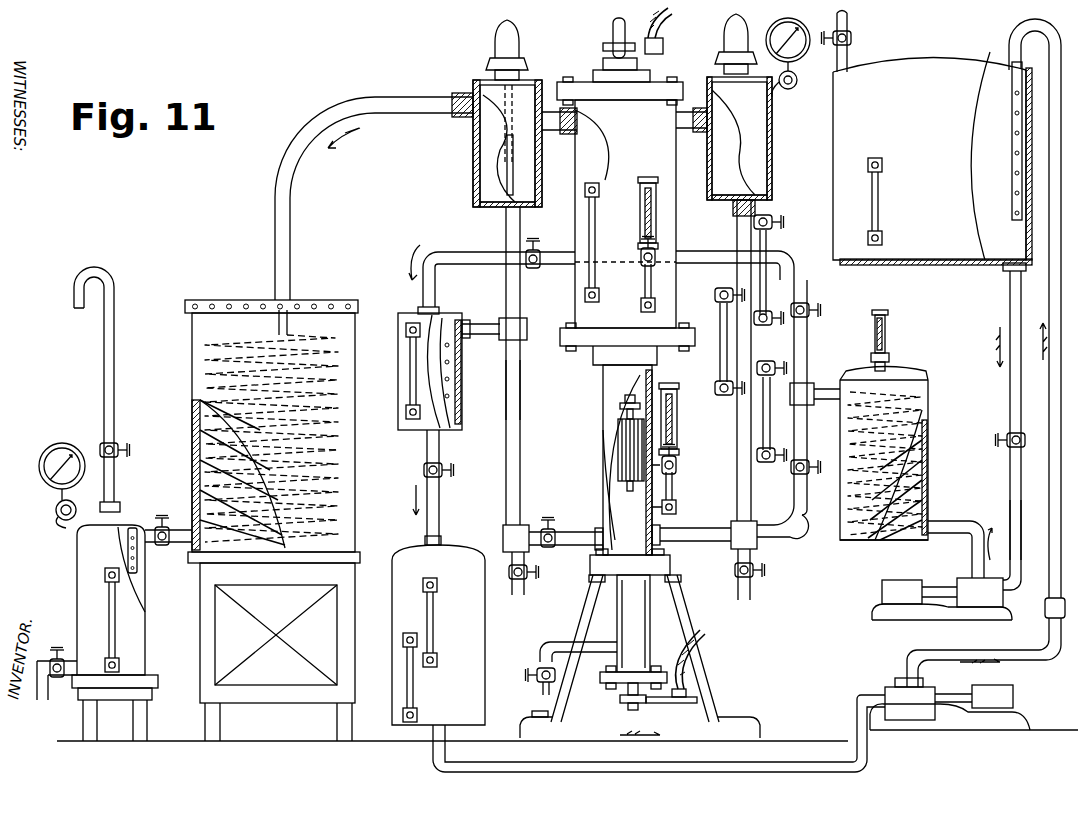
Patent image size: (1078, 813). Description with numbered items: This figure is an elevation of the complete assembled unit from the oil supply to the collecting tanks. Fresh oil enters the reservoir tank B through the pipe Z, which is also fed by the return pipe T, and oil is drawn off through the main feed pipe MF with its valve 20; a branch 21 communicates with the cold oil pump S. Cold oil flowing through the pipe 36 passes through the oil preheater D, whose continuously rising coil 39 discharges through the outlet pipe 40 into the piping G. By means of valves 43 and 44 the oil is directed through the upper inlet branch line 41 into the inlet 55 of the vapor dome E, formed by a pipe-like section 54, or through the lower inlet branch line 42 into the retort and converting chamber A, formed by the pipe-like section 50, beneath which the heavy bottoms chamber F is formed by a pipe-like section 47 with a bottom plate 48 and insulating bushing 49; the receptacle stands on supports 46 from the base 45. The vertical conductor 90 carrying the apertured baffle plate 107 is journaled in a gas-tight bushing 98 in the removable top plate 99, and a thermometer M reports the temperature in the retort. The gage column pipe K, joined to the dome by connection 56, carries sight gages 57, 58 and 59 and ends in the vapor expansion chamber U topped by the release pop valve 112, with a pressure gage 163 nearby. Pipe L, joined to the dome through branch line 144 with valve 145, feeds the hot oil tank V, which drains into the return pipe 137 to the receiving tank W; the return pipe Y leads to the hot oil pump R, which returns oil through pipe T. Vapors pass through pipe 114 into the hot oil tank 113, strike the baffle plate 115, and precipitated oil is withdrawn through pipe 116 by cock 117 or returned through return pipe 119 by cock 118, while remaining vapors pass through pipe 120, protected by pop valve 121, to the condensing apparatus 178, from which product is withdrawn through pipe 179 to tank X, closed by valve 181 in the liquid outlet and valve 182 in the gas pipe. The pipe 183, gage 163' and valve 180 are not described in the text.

The pipe 120 is at (289, 193).
The pop valve 121 is at (510, 40).
The hot oil tank 113 is at (472, 148).
The pipe 114 is at (553, 125).
The baffle plate 115 is at (509, 160).
The vertical conductor 90 is at (613, 40).
The removable top plate 99 is at (605, 78).
The gas-tight bushing 98 is at (636, 72).
The release pop valve 112 is at (733, 32).
The pressure gage 163 is at (801, 57).
The pipe Z is at (850, 55).
The connection 56 is at (690, 132).
The vapor expansion chamber U is at (768, 137).
The vapor dome E is at (672, 178).
The pipe-like section 54 is at (585, 222).
The inlet 55 is at (662, 255).
The upper inlet branch line 41 is at (703, 260).
The sight gage 57 is at (768, 243).
The reservoir tank B is at (922, 262).
The branch line 144 is at (455, 262).
The valve 145 is at (535, 272).
The valve 43 is at (805, 306).
The piping G is at (807, 352).
The hot oil tank V is at (400, 378).
The pipe L is at (520, 392).
The pipe-like section 50 is at (605, 385).
The apertured baffle plate 107 is at (620, 420).
The sight gage 58 is at (722, 358).
The main feed pipe MF is at (1011, 293).
The outlet pipe 40 is at (823, 390).
The return pipe T is at (1049, 405).
The continuously rising coil 39 is at (926, 428).
The condensing apparatus 178 is at (193, 380).
The vent pipe 183 is at (126, 355).
The pressure gauge 163' is at (63, 472).
The valve 182 is at (116, 445).
The valve 180 is at (442, 468).
The pipe 116 is at (534, 460).
The cock 118 is at (548, 522).
The return pipe 119 is at (570, 547).
The thermometer M is at (678, 452).
The gage column pipe K is at (737, 465).
The sight gage 59 is at (770, 418).
The valve 44 is at (805, 472).
The valve 20 is at (1023, 447).
The return pipe 137 is at (440, 505).
The retort and converting chamber A is at (615, 540).
The lower inlet branch line 42 is at (785, 545).
The oil preheater D is at (875, 540).
The pipe 36 is at (968, 527).
The branch 21 is at (1021, 535).
The tank X is at (85, 560).
The pipe 179 is at (175, 548).
The receiving tank W is at (480, 625).
The supports 46 is at (577, 625).
The pipe-like section 47 is at (620, 625).
The heavy bottoms chamber F is at (648, 637).
The bottom plate 48 is at (605, 683).
The insulating bushing 49 is at (625, 700).
The cock 117 is at (526, 580).
The valve 181 is at (47, 660).
The base 45 is at (752, 728).
The return pipe Y is at (785, 762).
The hot oil pump R is at (950, 694).
The cold oil pump S is at (942, 599).